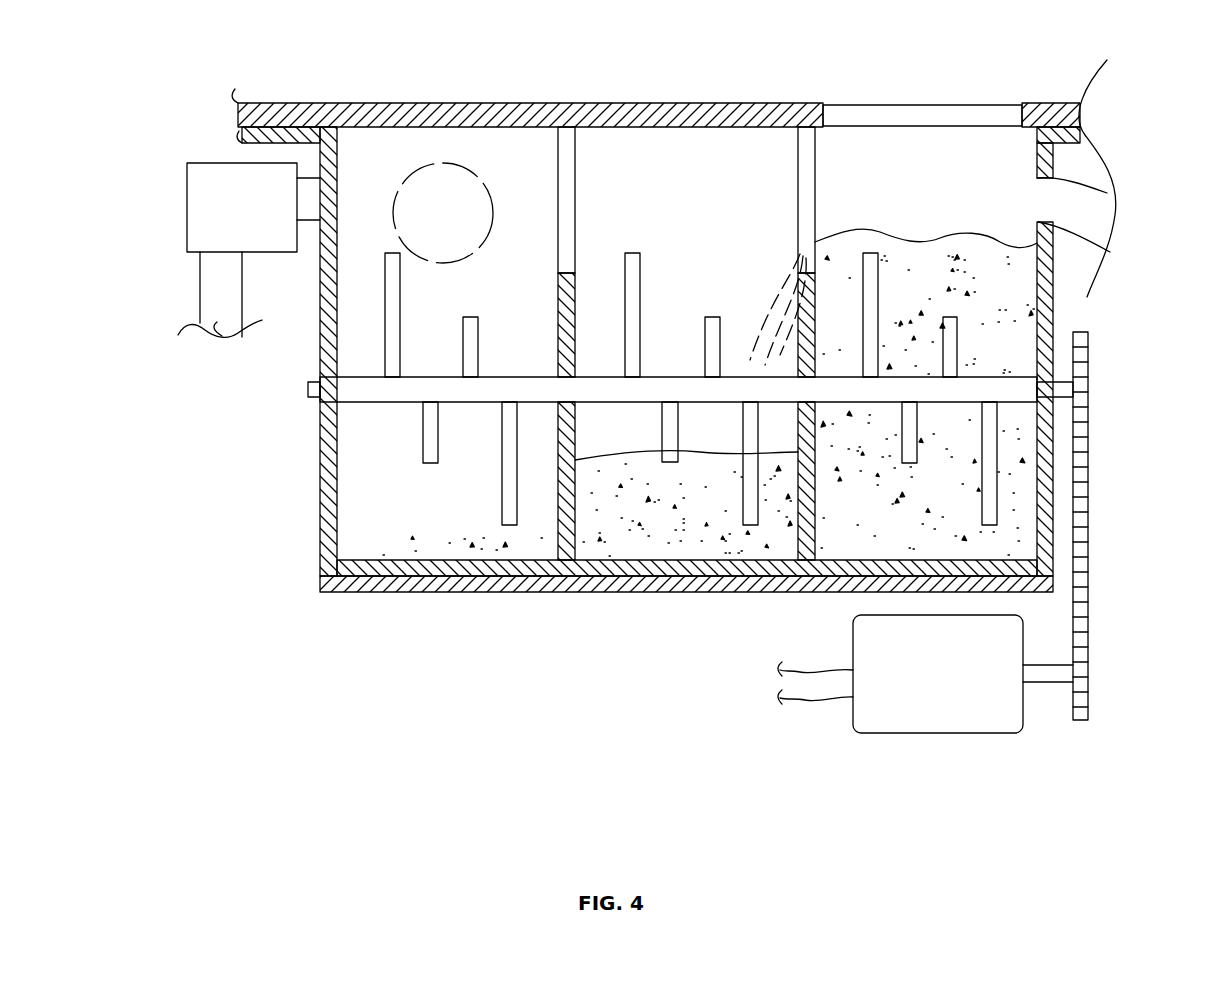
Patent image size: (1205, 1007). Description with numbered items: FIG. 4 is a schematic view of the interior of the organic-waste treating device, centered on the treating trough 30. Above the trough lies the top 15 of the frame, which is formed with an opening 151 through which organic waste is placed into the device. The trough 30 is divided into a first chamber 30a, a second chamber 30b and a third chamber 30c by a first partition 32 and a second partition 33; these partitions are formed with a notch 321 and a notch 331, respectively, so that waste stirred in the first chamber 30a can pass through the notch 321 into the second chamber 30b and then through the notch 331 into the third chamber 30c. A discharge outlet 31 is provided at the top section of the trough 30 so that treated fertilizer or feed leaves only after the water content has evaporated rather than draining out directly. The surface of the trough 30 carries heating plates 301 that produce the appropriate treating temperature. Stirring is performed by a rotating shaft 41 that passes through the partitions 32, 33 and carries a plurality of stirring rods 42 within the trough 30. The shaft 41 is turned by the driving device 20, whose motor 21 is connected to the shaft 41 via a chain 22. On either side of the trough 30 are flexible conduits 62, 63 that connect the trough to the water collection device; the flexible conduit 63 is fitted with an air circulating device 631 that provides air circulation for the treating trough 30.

The top 15 is at (786, 116).
The opening 151 is at (920, 116).
The driving device 20 is at (976, 572).
The motor 21 is at (953, 718).
The chain 22 is at (1082, 647).
The treating trough 30 is at (638, 578).
The first chamber 30a is at (987, 175).
The second chamber 30b is at (715, 160).
The third chamber 30c is at (512, 160).
The heating plates 301 is at (480, 592).
The discharge outlet 31 is at (437, 172).
The first partition 32 is at (813, 290).
The notch 321 is at (807, 187).
The second partition 33 is at (572, 292).
The notch 331 is at (567, 198).
The rotating shaft 41 is at (528, 377).
The stirring rods 42 is at (635, 298).
The flexible conduit 62 is at (1095, 198).
The flexible conduit 63 is at (222, 330).
The air circulating device 631 is at (214, 189).